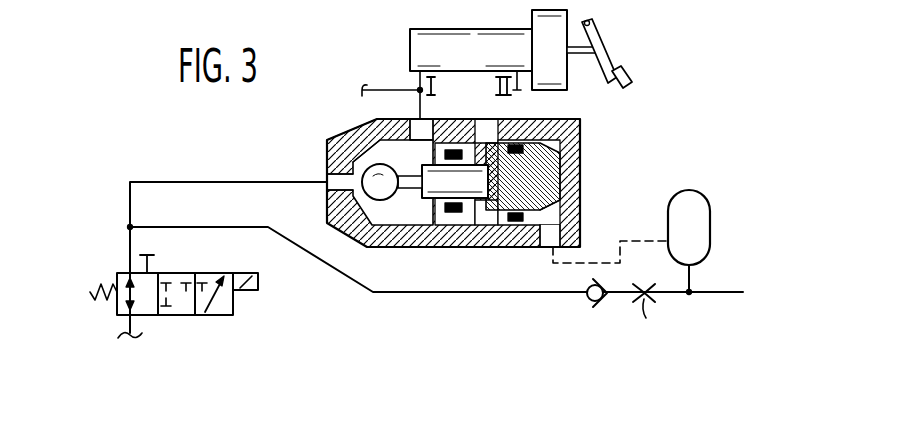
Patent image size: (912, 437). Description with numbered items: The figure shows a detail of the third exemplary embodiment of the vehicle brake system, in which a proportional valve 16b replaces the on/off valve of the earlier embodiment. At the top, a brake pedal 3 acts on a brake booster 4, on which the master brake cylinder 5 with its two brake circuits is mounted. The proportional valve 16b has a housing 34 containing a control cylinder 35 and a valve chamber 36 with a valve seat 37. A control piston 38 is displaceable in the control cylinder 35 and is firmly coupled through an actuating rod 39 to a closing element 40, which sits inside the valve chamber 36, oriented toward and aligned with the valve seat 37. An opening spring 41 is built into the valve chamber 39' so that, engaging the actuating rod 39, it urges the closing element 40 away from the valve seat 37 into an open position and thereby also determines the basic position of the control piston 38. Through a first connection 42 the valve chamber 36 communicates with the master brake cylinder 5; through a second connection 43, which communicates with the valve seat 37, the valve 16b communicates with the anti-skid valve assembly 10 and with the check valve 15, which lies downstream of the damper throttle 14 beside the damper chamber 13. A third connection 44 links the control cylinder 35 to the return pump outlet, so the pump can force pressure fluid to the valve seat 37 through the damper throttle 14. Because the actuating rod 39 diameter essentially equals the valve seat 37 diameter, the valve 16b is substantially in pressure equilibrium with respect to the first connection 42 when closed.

The brake pedal 3 is at (625, 73).
The brake booster 4 is at (562, 90).
The master brake cylinder 5 is at (447, 74).
The anti-skid valve assembly 10 is at (188, 252).
The damper chamber 13 is at (702, 214).
The damper throttle 14 is at (643, 306).
The check valve 15 is at (590, 306).
The proportional valve 16b is at (590, 117).
The housing 34 is at (583, 146).
The control cylinder 35 is at (568, 216).
The valve chamber 36 is at (375, 146).
The valve seat 37 is at (328, 138).
The control piston 38 is at (565, 180).
The actuating rod 39 is at (493, 215).
The valve chamber 39' is at (444, 220).
The closing element 40 is at (378, 226).
The opening spring 41 is at (402, 222).
The first connection 42 is at (432, 117).
The second connection 43 is at (327, 170).
The third connection 44 is at (547, 243).